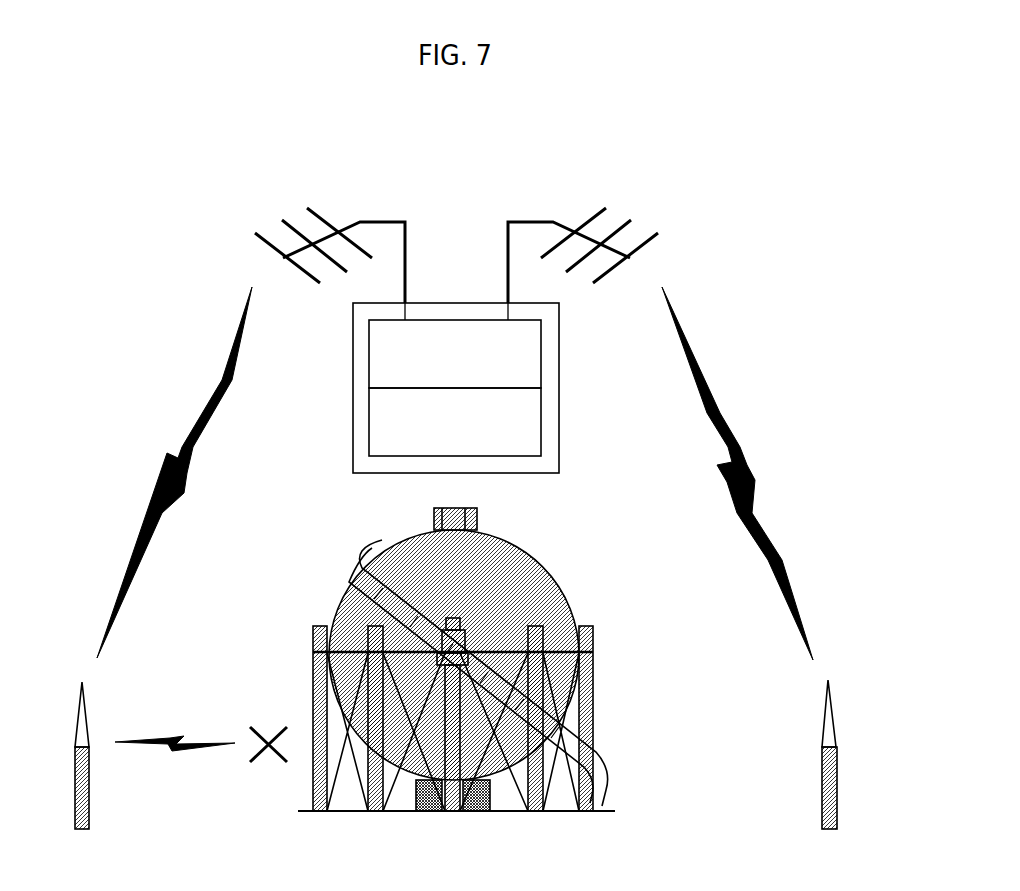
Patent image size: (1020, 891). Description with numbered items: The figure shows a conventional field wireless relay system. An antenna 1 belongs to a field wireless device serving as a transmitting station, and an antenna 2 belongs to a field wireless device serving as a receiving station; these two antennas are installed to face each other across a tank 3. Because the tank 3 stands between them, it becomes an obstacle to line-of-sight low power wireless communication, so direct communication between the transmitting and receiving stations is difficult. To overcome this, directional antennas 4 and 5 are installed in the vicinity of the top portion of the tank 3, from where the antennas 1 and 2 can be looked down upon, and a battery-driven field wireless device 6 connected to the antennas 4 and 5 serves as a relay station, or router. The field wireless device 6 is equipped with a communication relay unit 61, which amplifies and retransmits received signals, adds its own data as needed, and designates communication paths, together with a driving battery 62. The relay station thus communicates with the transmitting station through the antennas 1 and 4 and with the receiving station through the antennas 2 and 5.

The antenna 1 is at (88, 811).
The antenna 2 is at (822, 802).
The tank 3 is at (572, 598).
The antenna 4 is at (332, 212).
The antenna 5 is at (572, 213).
The field wireless device 6 is at (448, 296).
The communication relay unit 61 is at (542, 352).
The driving battery 62 is at (542, 418).